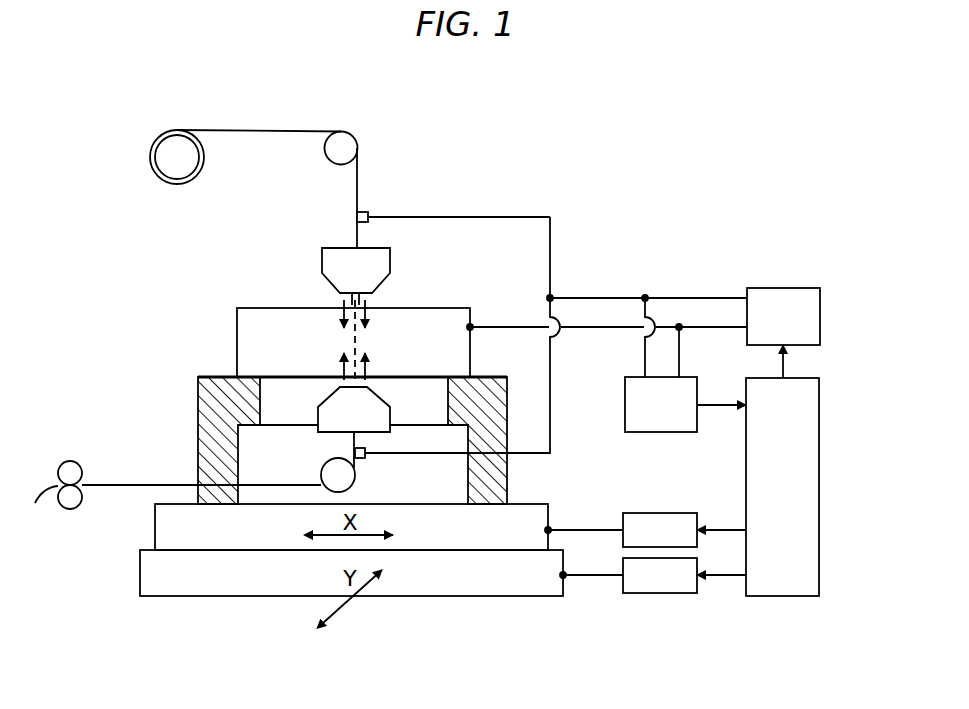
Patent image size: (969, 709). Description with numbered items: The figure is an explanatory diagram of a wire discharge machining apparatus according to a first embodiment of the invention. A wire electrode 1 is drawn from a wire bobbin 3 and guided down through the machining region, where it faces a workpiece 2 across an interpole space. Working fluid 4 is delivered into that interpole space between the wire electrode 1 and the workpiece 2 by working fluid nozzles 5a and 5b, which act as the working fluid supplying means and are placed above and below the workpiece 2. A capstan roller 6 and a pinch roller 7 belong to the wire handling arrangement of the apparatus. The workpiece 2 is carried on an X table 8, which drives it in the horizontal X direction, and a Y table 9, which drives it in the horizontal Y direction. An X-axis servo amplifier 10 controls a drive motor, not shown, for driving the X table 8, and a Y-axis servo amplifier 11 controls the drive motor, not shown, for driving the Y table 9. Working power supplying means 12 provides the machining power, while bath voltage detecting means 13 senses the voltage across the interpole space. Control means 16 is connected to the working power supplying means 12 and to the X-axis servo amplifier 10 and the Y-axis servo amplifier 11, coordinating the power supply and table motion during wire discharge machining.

The wire electrode 1 is at (358, 182).
The workpiece 2 is at (236, 343).
The wire bobbin 3 is at (150, 157).
The working fluid 4 is at (362, 303).
The working fluid nozzle 5a is at (321, 264).
The working fluid nozzle 5b is at (318, 413).
The capstan roller 6 is at (63, 509).
The pinch roller 7 is at (77, 460).
The X table 8 is at (155, 528).
The Y table 9 is at (140, 573).
The X-axis servo amplifier 10 is at (662, 513).
The Y-axis servo amplifier 11 is at (660, 594).
The working power supplying means 12 is at (782, 288).
The bath voltage detecting means 13 is at (624, 405).
The control means 16 is at (820, 486).